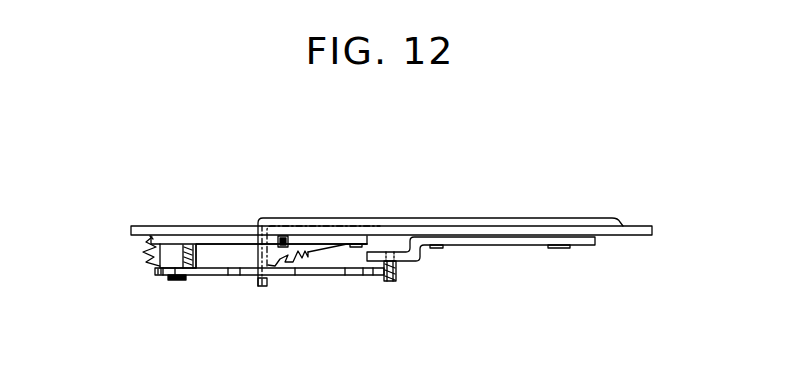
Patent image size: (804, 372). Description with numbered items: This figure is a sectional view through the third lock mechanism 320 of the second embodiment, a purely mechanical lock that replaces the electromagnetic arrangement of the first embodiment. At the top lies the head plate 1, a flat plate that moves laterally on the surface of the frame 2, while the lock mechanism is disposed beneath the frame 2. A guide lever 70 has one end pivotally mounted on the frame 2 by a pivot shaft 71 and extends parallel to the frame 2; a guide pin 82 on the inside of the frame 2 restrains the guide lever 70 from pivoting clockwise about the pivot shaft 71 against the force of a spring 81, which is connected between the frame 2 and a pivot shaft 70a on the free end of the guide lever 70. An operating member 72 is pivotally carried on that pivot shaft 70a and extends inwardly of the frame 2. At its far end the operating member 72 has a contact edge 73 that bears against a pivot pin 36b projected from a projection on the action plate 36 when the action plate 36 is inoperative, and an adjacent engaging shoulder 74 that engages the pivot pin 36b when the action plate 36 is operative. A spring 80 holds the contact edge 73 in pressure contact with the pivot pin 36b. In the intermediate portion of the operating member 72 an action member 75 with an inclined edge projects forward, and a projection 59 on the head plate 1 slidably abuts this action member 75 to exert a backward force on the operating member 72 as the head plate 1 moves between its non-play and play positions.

The third lock mechanism 320 is at (405, 178).
The head plate 1 is at (571, 220).
The frame 2 is at (635, 231).
The guide lever 70 is at (207, 236).
The pivot shaft 70a is at (180, 281).
The operating member 72 is at (297, 276).
The action member 75 is at (234, 277).
The engaging shoulder 74 is at (353, 276).
The contact edge 73 is at (370, 276).
The action plate 36 is at (414, 262).
The pivot pin 36b is at (389, 282).
The pivot shaft 71 is at (365, 237).
The spring 80 is at (305, 250).
The guide pin 82 is at (283, 236).
The spring 81 is at (147, 255).
The projection 59 is at (260, 293).